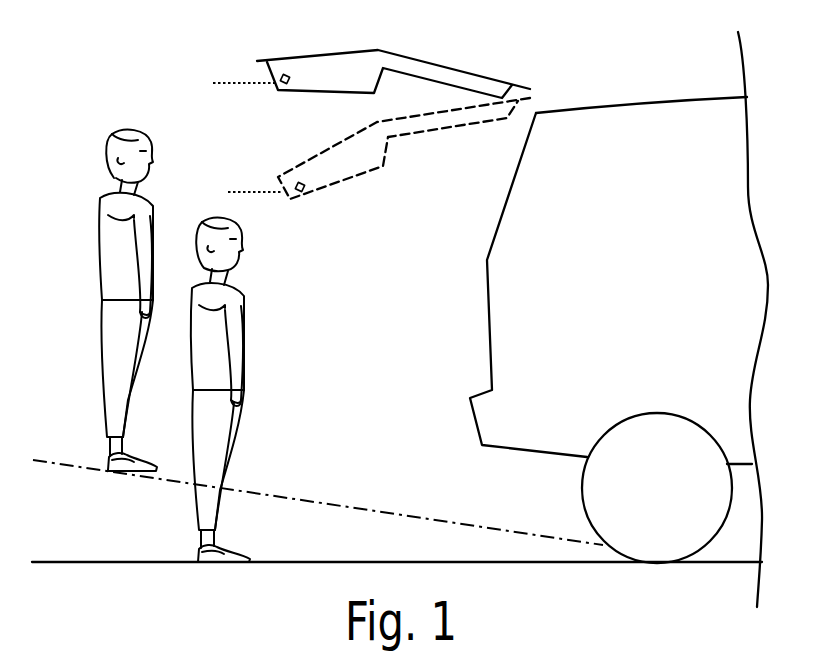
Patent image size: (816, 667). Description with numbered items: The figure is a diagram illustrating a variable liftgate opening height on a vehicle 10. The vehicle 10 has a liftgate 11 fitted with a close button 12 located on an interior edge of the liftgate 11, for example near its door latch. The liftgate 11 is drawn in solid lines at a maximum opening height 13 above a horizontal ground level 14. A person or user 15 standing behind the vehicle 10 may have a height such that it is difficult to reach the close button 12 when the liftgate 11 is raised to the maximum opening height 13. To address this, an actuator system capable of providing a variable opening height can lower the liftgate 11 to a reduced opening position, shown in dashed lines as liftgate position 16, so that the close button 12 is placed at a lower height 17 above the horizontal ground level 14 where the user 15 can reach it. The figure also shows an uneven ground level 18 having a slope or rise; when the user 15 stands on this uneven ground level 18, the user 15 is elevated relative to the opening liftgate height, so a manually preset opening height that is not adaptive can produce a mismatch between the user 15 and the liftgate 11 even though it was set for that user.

The vehicle 10 is at (672, 94).
The liftgate 11 is at (447, 65).
The close button 12 is at (291, 77).
The maximum opening height 13 is at (222, 81).
The horizontal ground level 14 is at (505, 564).
The person or user 15 is at (238, 462).
The liftgate position 16 is at (419, 139).
The height 17 is at (236, 189).
The uneven ground level 18 is at (448, 518).